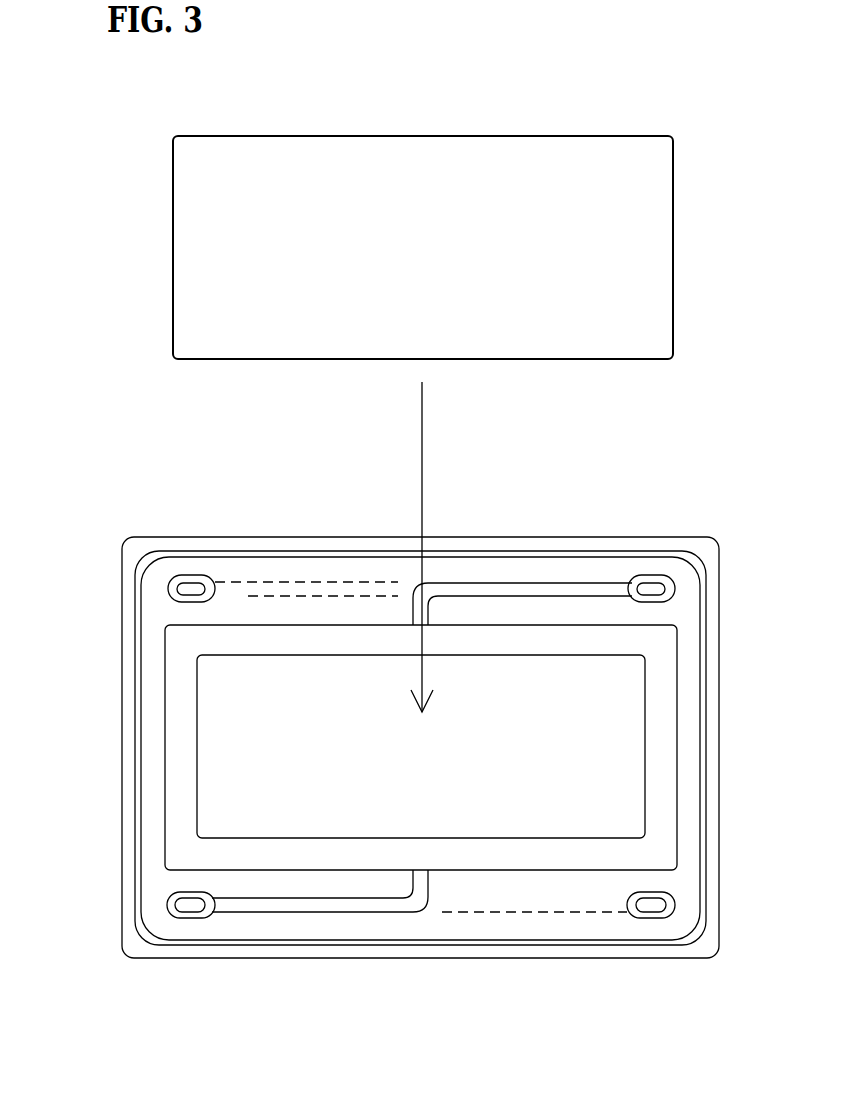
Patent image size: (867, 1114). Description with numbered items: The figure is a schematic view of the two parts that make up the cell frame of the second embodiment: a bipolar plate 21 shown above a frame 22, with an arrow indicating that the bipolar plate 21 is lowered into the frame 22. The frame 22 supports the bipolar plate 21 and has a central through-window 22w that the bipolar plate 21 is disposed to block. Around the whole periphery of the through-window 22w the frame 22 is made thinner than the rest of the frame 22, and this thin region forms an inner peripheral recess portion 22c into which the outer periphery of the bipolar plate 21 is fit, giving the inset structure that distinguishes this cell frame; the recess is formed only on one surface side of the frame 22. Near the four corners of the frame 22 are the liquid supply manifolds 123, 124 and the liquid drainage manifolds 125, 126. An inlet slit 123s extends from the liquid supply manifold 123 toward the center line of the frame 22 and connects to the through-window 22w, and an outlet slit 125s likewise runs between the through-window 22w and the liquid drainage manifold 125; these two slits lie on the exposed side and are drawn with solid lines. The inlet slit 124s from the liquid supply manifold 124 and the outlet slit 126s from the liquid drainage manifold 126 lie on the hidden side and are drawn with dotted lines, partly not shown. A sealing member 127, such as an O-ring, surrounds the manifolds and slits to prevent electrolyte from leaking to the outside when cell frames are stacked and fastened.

The bipolar plate 21 is at (173, 152).
The frame 22 is at (133, 537).
The inner peripheral recess portion 22c is at (552, 645).
The through-window 22w is at (285, 755).
The liquid supply manifold 123 is at (190, 906).
The inlet slit 123s is at (268, 905).
The liquid supply manifold 124 is at (648, 906).
The inlet slit 124s is at (517, 912).
The liquid drainage manifold 125 is at (636, 580).
The outlet slit 125s is at (541, 580).
The liquid drainage manifold 126 is at (193, 580).
The outlet slit 126s is at (284, 590).
The sealing member 127 is at (700, 805).